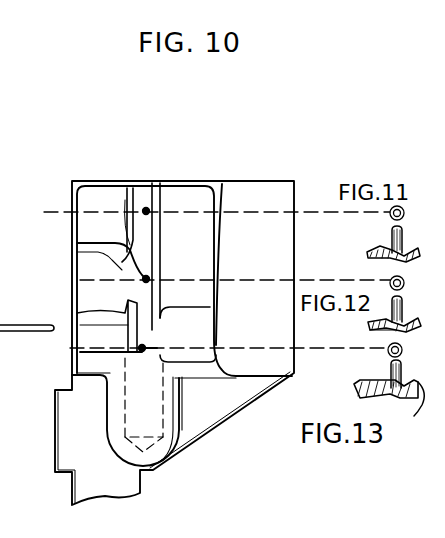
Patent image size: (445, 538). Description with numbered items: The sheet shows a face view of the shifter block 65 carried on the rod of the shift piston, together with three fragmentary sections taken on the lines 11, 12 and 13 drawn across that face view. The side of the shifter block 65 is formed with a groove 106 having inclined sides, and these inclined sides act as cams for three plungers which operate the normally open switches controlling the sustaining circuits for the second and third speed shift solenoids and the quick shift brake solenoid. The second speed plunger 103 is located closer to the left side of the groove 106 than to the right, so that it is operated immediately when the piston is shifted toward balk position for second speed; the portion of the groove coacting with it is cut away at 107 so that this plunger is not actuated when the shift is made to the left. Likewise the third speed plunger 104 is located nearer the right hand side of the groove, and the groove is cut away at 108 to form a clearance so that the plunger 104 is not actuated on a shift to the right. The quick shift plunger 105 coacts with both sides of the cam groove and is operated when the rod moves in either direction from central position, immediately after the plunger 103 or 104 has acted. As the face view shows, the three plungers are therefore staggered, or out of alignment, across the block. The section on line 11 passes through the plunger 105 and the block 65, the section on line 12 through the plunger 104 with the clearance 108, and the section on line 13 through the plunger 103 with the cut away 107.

In FIG. 10, the shifter block 65 is at (203, 200).
In FIG. 11, the shifter block 65 is at (369, 253).
In FIG. 12, the shifter block 65 is at (387, 329).
In FIG. 13, the shifter block 65 is at (356, 390).
In FIG. 10, the second speed plunger 103 is at (124, 349).
In FIG. 13, the second speed plunger 103 is at (392, 372).
In FIG. 10, the third speed plunger 104 is at (79, 254).
In FIG. 12, the third speed plunger 104 is at (392, 302).
In FIG. 10, the quick shift plunger 105 is at (117, 180).
In FIG. 11, the quick shift plunger 105 is at (395, 241).
In FIG. 10, the groove 106 is at (145, 181).
In FIG. 10, the cut away portion 107 is at (190, 322).
In FIG. 13, the cut away portion 107 is at (414, 416).
In FIG. 10, the cut away portion 108 is at (87, 287).
In FIG. 12, the cut away portion 108 is at (380, 322).
In FIG. 10, the section line 11— 11 is at (217, 205).
In FIG. 10, the section line 12— 12 is at (235, 275).
In FIG. 10, the section line 13— 13 is at (229, 343).